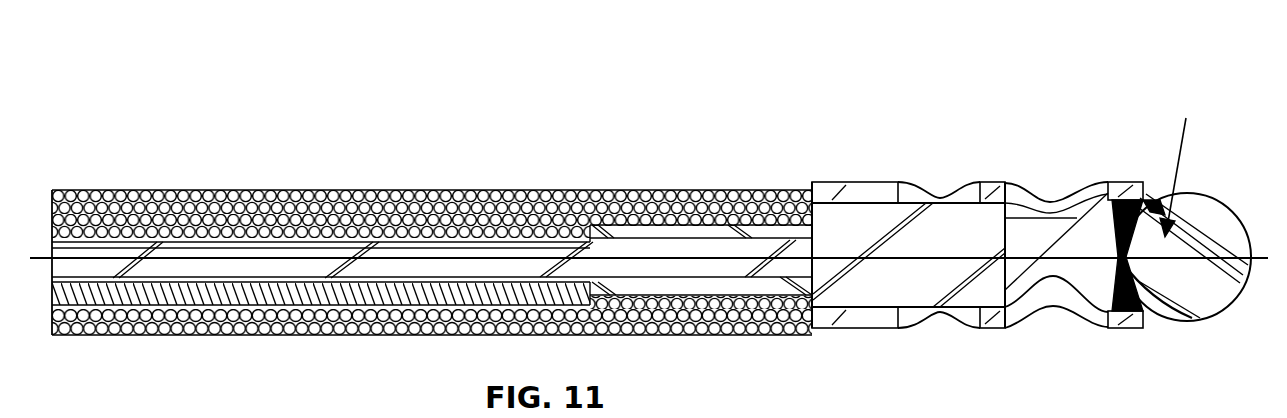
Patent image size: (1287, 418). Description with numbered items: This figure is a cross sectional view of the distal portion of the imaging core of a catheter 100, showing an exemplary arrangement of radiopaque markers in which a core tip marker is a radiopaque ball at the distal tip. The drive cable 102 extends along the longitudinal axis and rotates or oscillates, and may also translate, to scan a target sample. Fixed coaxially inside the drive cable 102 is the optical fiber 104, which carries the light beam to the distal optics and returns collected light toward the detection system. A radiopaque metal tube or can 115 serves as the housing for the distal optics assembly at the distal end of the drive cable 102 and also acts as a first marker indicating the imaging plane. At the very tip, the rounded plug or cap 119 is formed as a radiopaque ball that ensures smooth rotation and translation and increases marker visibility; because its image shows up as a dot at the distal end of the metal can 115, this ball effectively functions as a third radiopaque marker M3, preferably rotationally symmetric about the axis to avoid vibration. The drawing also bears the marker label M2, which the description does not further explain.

The catheter 100 is at (757, 103).
The drive cable 102 is at (160, 192).
The optical fiber 104 is at (455, 253).
The radiopaque metal tube or can 115 is at (845, 318).
The rounded plug or cap 119 is at (1176, 320).
The marker M2 annotation M2 is at (1109, 410).
The third radiopaque marker M3 is at (1129, 118).